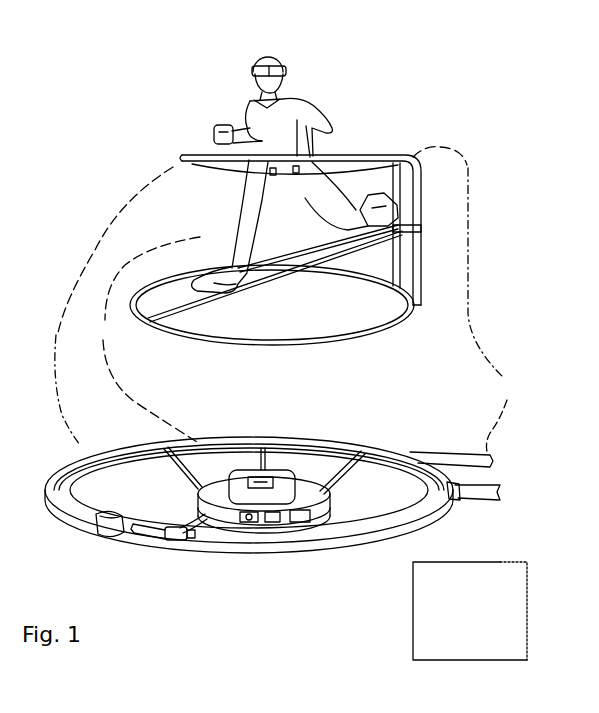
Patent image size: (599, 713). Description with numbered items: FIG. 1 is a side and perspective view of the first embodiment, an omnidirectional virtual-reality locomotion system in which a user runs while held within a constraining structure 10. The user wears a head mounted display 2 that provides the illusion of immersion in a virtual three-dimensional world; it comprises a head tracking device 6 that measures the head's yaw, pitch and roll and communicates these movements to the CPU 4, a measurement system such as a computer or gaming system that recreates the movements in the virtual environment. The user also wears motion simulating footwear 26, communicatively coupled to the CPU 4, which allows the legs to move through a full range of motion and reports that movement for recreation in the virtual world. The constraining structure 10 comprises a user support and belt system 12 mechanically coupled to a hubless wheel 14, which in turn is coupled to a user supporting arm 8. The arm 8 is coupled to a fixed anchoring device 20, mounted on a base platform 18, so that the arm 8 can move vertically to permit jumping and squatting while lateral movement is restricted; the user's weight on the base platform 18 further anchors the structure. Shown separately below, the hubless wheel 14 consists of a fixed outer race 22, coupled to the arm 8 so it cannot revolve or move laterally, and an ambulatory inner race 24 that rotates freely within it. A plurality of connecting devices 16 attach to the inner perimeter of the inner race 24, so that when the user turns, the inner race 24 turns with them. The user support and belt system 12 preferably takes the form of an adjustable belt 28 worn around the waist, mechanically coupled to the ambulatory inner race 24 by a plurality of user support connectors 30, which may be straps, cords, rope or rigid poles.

The head mounted display 2 is at (253, 70).
The CPU 4 is at (470, 611).
The head tracking device 6 is at (258, 58).
The user supporting arm 8 is at (459, 323).
The constraining structure 10 is at (93, 136).
The user support and belt system 12 is at (146, 339).
The hubless wheel 14 is at (110, 306).
The connecting devices 16 is at (170, 521).
The base platform 18 is at (394, 323).
The fixed anchoring device 20 is at (422, 245).
The fixed outer race 22 is at (70, 528).
The ambulatory inner race 24 is at (188, 548).
The motion simulating footwear 26 is at (288, 290).
The adjustable belt 28 is at (333, 500).
The user support connectors 30 is at (343, 466).